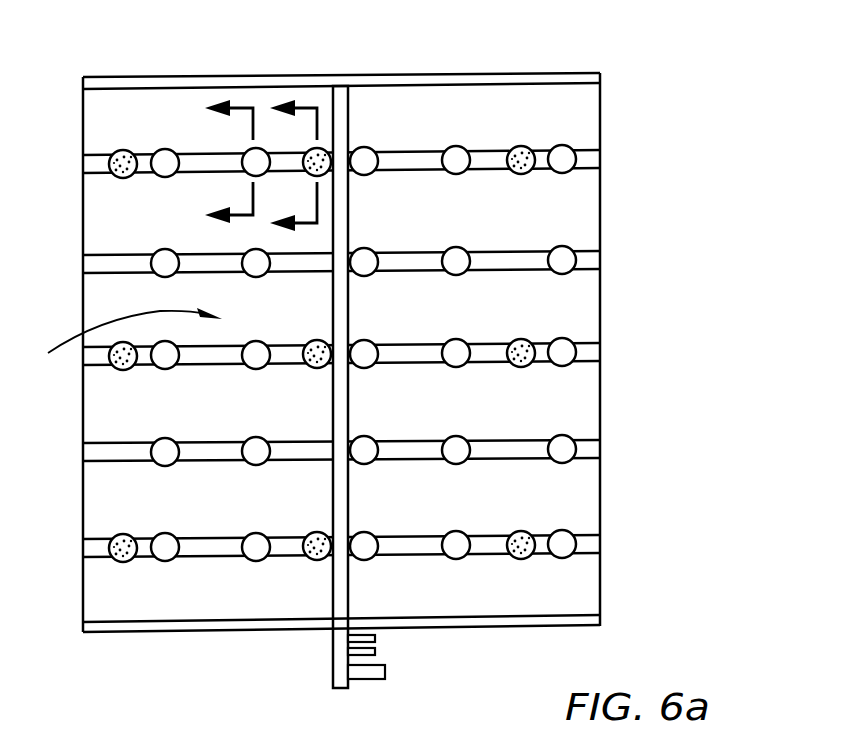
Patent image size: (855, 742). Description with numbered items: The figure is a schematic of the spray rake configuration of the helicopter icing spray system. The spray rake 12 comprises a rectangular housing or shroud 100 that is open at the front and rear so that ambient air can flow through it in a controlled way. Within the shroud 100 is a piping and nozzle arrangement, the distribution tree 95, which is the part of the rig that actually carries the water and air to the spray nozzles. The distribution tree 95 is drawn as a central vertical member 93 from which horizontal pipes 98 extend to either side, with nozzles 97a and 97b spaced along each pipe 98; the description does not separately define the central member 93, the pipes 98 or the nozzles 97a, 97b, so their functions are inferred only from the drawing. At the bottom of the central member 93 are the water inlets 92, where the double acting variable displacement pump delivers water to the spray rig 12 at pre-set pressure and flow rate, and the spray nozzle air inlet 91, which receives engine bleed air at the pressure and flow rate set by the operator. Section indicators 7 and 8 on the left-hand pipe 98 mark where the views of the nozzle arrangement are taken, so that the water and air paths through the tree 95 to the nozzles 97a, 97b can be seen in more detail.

The spray rake 12 is at (348, 63).
The rectangular housing or shroud 100 is at (614, 129).
The central support bar 93 is at (355, 492).
The horizontal rods 98 is at (405, 162).
The plain balls 97a is at (458, 148).
The marked balls 97b is at (326, 153).
The distribution tree 95 is at (126, 347).
The water inlets 92 is at (377, 640).
The spray nozzle air inlet 91 is at (385, 671).
The section line 7- 7 is at (218, 165).
The section line 8- 8 is at (293, 165).